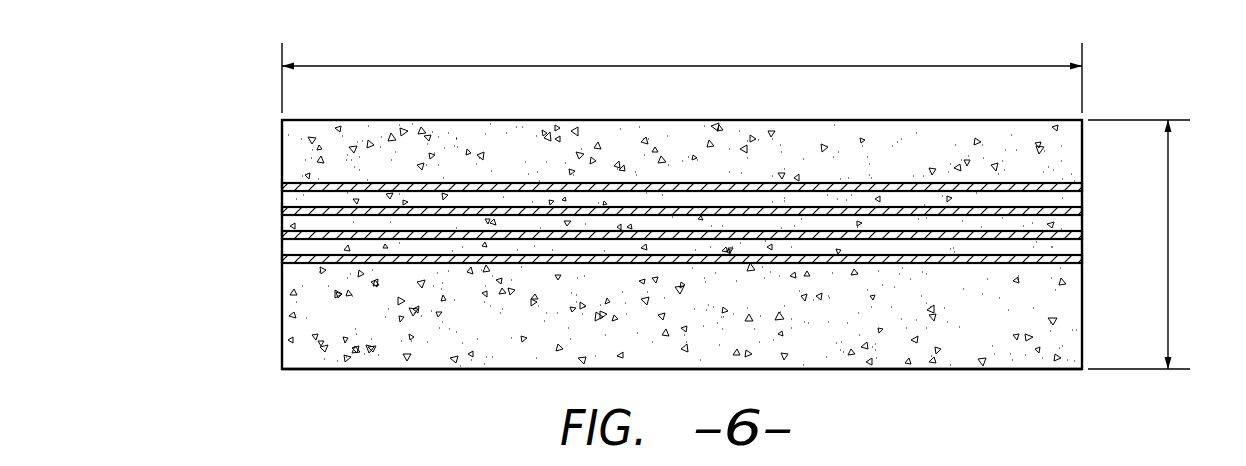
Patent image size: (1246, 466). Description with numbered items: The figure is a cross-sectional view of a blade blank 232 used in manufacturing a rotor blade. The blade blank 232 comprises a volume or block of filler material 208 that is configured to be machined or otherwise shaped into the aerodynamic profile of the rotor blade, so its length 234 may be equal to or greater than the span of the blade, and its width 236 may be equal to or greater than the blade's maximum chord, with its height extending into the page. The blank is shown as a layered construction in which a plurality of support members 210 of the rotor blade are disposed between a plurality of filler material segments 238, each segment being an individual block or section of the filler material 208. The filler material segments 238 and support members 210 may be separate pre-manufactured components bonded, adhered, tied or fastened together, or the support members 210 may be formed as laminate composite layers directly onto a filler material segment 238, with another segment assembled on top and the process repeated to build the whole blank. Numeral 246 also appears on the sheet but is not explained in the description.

The blade blank 232 is at (206, 174).
The filler material 208 is at (580, 135).
The support members 210 is at (1015, 183).
The filler material segments 238 is at (282, 155).
The length 234 is at (853, 66).
The width 236 is at (1183, 220).
The bottom surface 246 is at (661, 417).